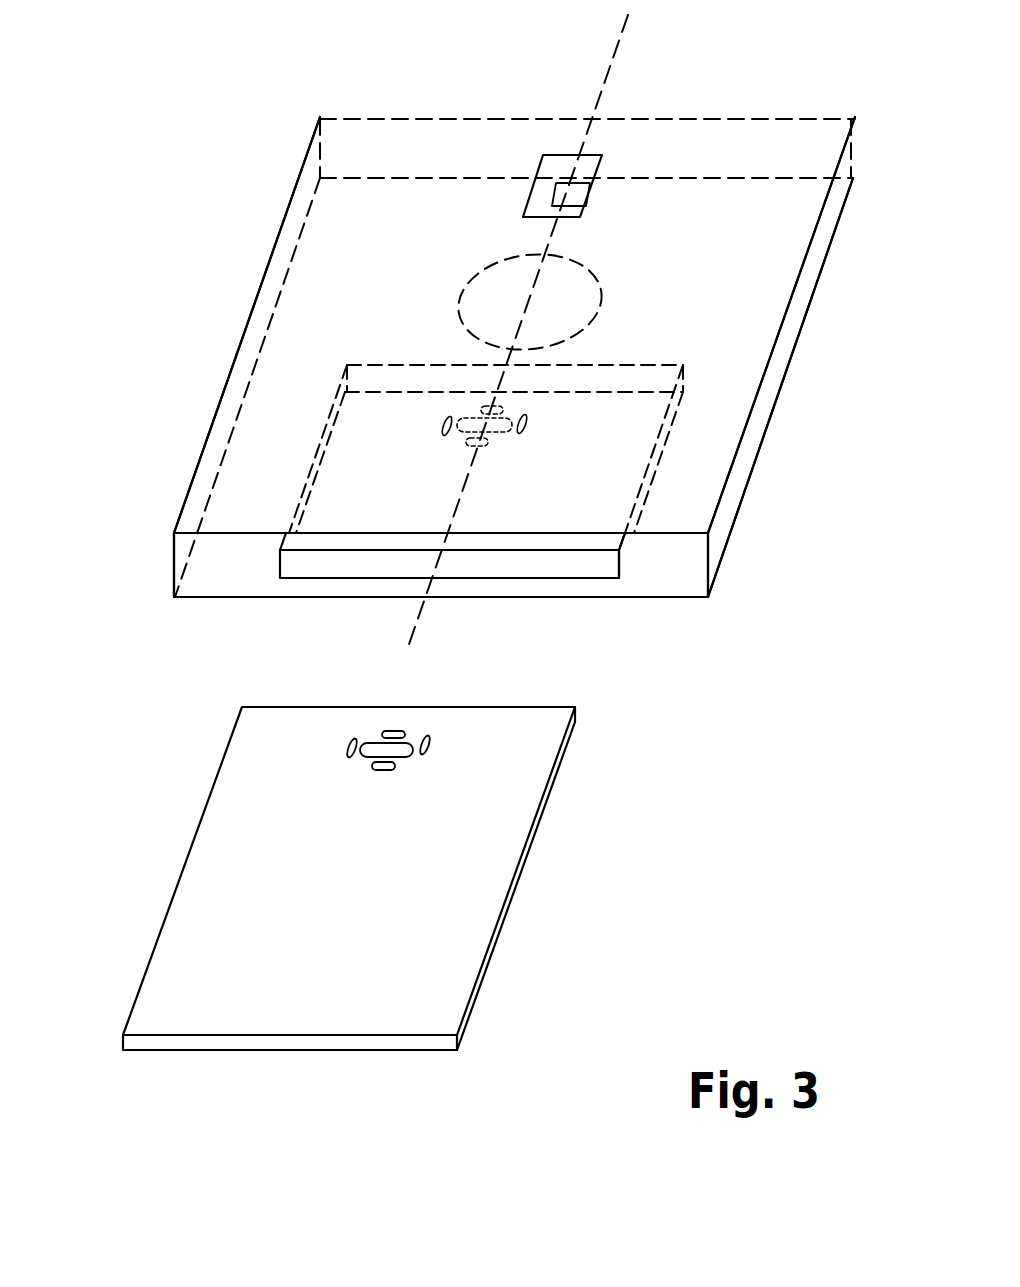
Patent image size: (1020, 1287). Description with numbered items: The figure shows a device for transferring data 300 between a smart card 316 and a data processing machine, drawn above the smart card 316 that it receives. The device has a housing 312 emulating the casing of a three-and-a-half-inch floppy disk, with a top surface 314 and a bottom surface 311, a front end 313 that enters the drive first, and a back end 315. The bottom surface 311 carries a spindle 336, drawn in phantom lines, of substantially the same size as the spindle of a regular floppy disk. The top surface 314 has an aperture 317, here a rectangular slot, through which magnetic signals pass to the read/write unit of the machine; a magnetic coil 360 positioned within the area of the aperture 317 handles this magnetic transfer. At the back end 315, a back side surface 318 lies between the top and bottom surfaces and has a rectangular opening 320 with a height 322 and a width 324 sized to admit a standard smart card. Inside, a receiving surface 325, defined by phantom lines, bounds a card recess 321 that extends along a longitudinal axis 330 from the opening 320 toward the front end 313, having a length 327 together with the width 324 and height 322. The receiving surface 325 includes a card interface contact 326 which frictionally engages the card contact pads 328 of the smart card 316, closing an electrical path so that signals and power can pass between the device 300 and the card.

The device for transferring data 300 is at (790, 372).
The bottom surface 311 is at (320, 222).
The housing 312 is at (820, 242).
The front end 313 is at (723, 155).
The top surface 314 is at (793, 222).
The back end 315 is at (698, 573).
The smart card 316 is at (453, 1005).
The aperture 317 is at (563, 182).
The back side surface 318 is at (198, 565).
The opening 320 is at (605, 570).
The card recess 321 is at (663, 440).
The height 322 is at (278, 567).
The width 324 is at (425, 597).
The receiving surface 325 is at (653, 414).
The card interface contact 326 is at (450, 421).
The length 327 is at (312, 460).
The card contact pads 328 is at (430, 749).
The longitudinal axis 330 is at (618, 42).
The spindle 336 is at (598, 296).
The magnetic coil 360 is at (583, 185).